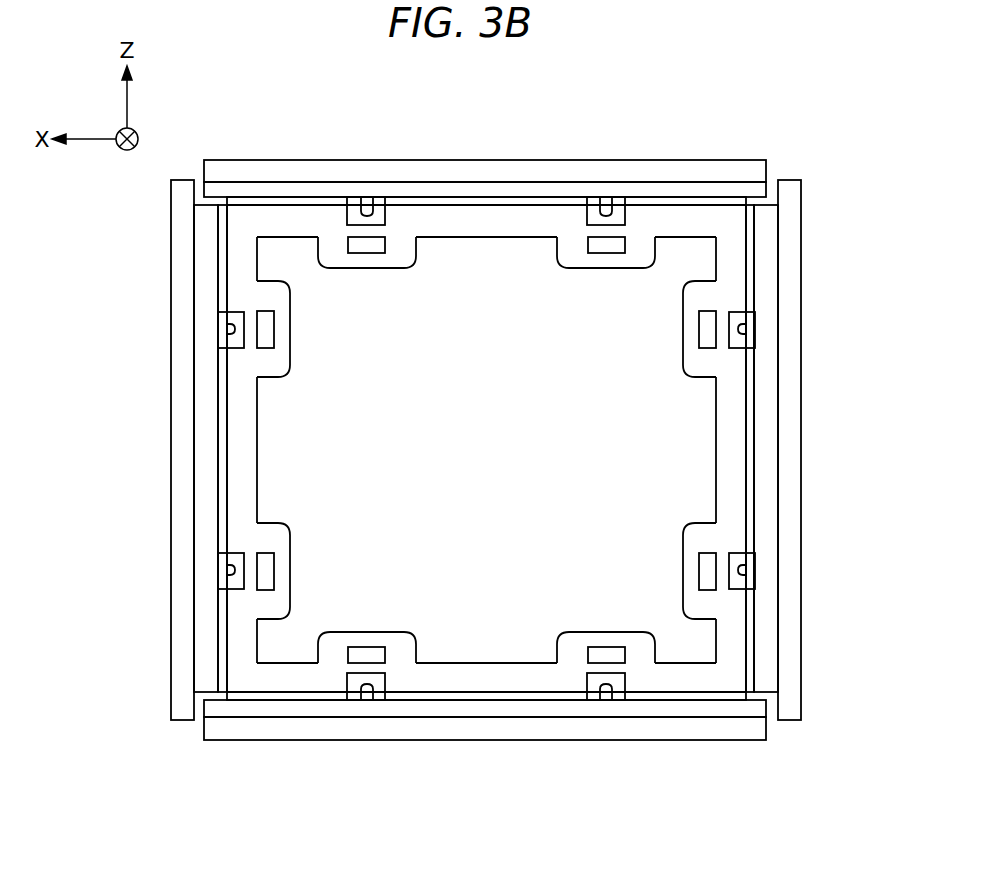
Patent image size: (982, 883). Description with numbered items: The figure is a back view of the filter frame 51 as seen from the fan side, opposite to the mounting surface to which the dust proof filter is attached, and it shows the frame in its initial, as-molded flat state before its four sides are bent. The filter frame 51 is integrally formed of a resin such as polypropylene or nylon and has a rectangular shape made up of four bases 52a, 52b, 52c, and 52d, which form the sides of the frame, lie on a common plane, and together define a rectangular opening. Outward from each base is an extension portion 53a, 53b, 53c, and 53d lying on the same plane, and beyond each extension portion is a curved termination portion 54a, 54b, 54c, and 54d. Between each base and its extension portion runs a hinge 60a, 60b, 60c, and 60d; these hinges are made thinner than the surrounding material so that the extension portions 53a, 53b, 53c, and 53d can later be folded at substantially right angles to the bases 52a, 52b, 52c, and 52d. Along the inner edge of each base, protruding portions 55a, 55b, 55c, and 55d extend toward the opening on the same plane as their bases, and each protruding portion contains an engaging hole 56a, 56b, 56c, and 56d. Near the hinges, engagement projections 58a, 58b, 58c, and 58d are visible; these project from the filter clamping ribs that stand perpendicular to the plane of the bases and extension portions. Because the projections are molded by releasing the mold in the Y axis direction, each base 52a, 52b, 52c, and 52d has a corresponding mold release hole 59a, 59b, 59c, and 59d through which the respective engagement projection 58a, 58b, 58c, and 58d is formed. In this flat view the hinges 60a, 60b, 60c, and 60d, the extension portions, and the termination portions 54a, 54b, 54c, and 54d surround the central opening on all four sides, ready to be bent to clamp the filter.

The filter frame 51 is at (136, 494).
The base 52a is at (475, 224).
The base 52b is at (245, 452).
The base 52c is at (487, 670).
The base 52d is at (728, 448).
The extension portion 53a is at (497, 180).
The extension portion 53b is at (190, 407).
The extension portion 53c is at (510, 730).
The extension portion 53d is at (790, 446).
The termination portion 54a is at (415, 192).
The termination portion 54b is at (206, 291).
The termination portion 54c is at (415, 720).
The termination portion 54d is at (766, 400).
The protruding portion 55a is at (360, 266).
The protruding portion 55b is at (280, 356).
The protruding portion 55c is at (393, 640).
The protruding portion 55d is at (694, 360).
The engaging hole 56a is at (376, 248).
The engaging hole 56b is at (268, 326).
The engaging hole 56c is at (366, 650).
The engaging hole 56d is at (706, 326).
The engagement projection 58a is at (371, 198).
The engagement projection 58b is at (227, 329).
The engagement projection 58c is at (366, 702).
The engagement projection 58d is at (746, 329).
The mold release hole 59a is at (355, 216).
The mold release hole 59b is at (234, 344).
The mold release hole 59c is at (353, 682).
The mold release hole 59d is at (742, 450).
The hinge 60a is at (238, 202).
The hinge 60b is at (221, 250).
The hinge 60c is at (251, 696).
The hinge 60d is at (750, 236).